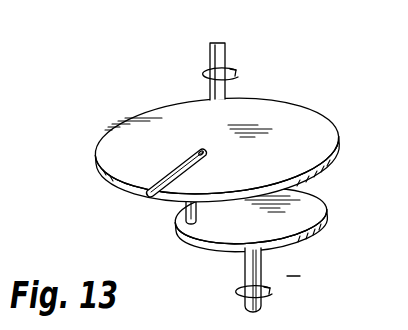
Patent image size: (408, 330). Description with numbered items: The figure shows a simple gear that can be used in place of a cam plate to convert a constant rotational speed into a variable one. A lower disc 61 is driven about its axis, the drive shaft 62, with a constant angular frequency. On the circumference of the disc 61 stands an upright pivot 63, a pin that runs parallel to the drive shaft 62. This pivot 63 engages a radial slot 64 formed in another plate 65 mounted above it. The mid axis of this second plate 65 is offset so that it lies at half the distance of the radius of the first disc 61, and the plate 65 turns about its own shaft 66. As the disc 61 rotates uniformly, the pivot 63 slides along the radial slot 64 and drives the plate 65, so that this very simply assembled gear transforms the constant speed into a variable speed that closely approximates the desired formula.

The disc 61 is at (321, 221).
The drive shaft 62 is at (262, 306).
The pivot 63 is at (197, 212).
The radial slot 64 is at (155, 198).
The plate 65 is at (324, 121).
The shaft of upper disk 66 is at (226, 46).